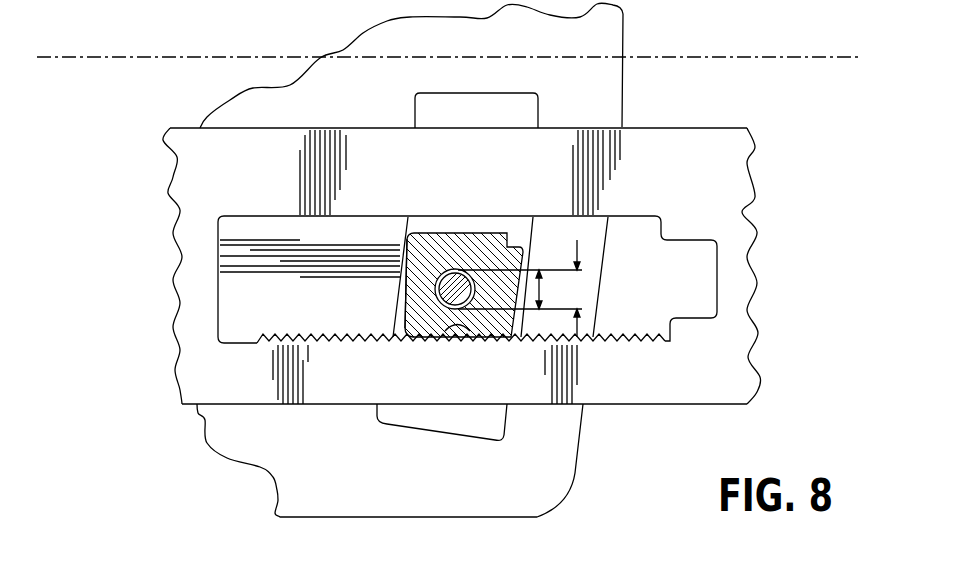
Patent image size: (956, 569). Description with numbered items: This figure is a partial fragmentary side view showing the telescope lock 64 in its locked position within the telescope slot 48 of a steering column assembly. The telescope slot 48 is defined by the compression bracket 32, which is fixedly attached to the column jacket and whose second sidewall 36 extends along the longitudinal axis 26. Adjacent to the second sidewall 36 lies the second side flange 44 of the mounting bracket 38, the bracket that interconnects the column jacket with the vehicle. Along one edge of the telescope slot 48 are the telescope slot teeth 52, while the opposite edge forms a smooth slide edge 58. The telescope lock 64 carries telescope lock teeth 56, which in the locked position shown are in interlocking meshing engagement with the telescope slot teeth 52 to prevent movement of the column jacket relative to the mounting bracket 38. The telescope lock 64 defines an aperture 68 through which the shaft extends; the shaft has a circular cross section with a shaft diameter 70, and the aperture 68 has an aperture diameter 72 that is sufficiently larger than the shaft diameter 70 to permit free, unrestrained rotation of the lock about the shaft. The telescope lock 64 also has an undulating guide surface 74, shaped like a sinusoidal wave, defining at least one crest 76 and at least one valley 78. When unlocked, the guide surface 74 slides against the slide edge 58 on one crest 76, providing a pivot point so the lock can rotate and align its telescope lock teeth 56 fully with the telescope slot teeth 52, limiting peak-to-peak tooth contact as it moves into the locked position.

The longitudinal axis 26 is at (52, 58).
The compression bracket 32 is at (682, 145).
The second sidewall 36 is at (725, 183).
The mounting bracket 38 is at (557, 468).
The second side flange 44 is at (270, 457).
The telescope slot 48 is at (266, 222).
The telescope slot teeth 52 is at (333, 333).
The telescope lock teeth 56 is at (465, 337).
The slide edge 58 is at (415, 112).
The telescope lock 64 is at (450, 268).
The aperture 68 is at (443, 305).
The shaft diameter 70 is at (552, 298).
The aperture diameter 72 is at (577, 240).
The guide surface 74 is at (393, 316).
The crest 76 is at (398, 317).
The valley 78 is at (400, 300).